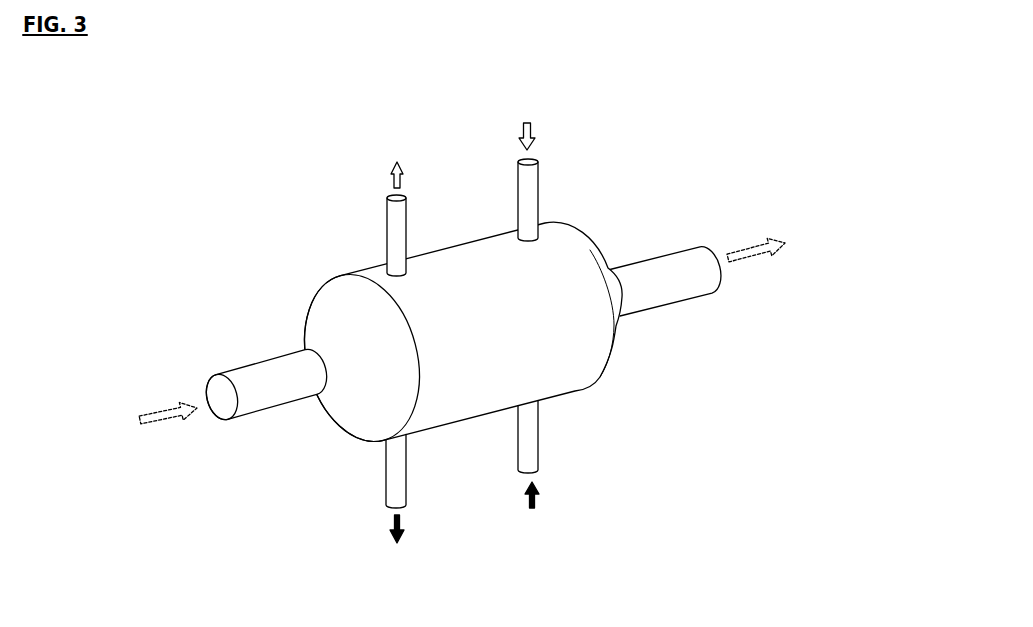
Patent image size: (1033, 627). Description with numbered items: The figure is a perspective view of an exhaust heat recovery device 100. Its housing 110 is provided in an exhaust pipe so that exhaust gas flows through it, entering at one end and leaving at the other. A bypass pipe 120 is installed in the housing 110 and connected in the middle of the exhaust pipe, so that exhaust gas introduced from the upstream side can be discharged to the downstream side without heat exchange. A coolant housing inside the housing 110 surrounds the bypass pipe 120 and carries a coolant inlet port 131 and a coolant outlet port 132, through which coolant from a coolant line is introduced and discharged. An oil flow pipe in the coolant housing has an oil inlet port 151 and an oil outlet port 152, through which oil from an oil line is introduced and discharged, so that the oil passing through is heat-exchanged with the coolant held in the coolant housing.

The exhaust heat recovery device 100 is at (452, 200).
The housing 110 is at (333, 308).
The bypass pipe 120 is at (267, 373).
The coolant inlet port 131 is at (528, 185).
The coolant outlet port 132 is at (393, 225).
The oil inlet port 151 is at (533, 435).
The oil outlet port 152 is at (400, 468).